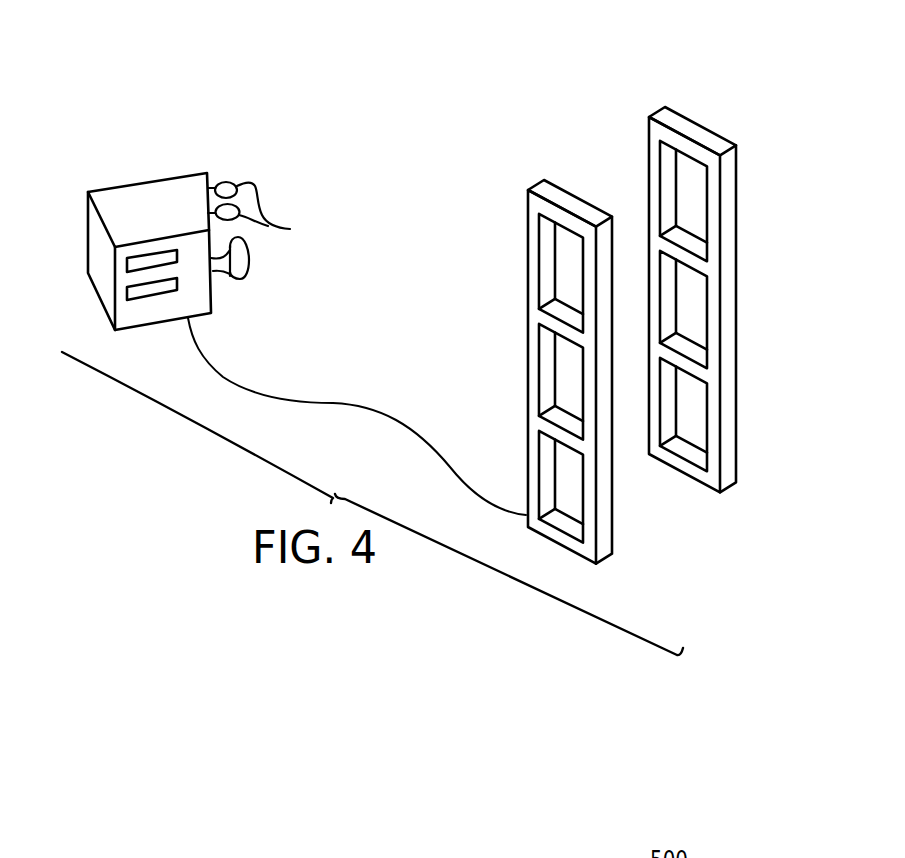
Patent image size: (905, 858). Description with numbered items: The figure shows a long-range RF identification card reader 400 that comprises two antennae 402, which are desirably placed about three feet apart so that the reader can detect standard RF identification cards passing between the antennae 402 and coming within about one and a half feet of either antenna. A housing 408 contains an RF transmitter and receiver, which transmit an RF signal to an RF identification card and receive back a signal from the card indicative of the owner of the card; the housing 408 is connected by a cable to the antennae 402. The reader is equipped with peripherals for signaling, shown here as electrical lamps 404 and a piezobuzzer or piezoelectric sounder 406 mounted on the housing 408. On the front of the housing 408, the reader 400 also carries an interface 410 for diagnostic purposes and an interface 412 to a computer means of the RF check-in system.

The long-range RF identification card reader 400 is at (727, 95).
The antennae 402 is at (736, 323).
The electrical lamps 404 is at (270, 212).
The piezobuzzer or piezoelectric sounder 406 is at (248, 257).
The housing 408 is at (126, 229).
The interface 410 is at (127, 297).
The interface 412 is at (127, 268).